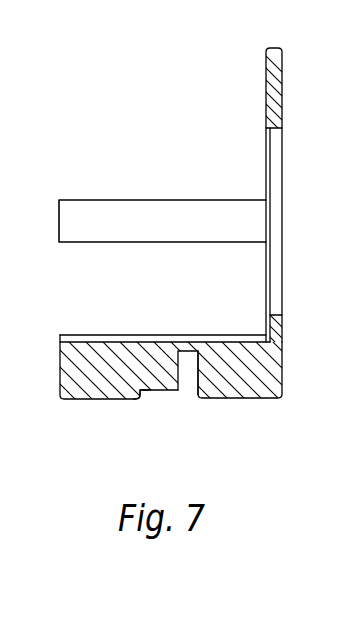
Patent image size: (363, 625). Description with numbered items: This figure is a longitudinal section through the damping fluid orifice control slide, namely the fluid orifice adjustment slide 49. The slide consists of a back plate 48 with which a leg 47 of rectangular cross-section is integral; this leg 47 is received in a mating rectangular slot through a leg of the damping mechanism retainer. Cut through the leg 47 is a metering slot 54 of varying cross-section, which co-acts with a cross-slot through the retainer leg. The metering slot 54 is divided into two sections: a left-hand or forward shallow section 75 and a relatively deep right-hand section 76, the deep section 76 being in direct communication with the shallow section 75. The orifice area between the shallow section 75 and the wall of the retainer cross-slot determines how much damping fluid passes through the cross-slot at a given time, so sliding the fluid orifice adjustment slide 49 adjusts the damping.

The leg 47 is at (60, 370).
The back plate 48 is at (283, 83).
The fluid orifice adjustment slide 49 is at (281, 387).
The metering slot 54 is at (186, 391).
The shallow section 75 is at (146, 393).
The deep section 76 is at (190, 362).